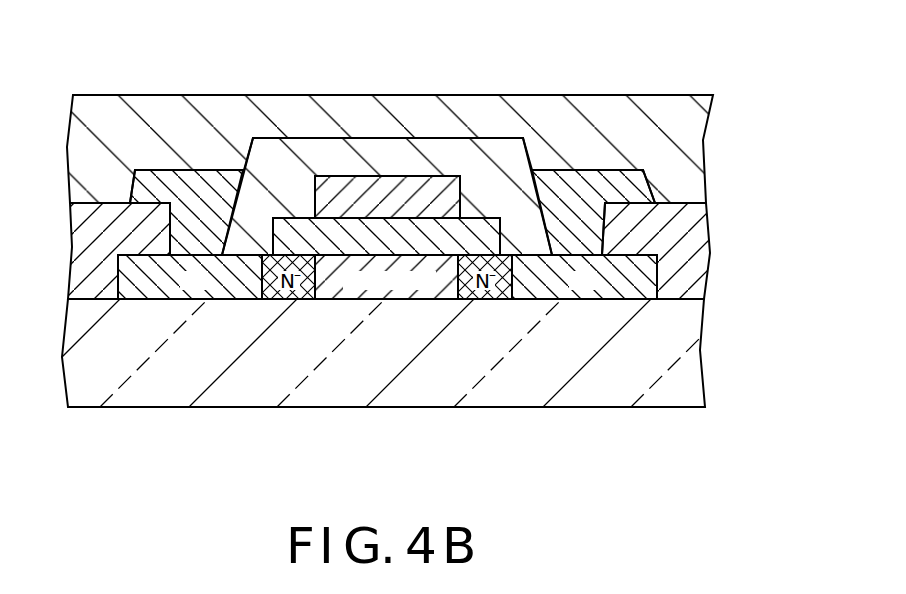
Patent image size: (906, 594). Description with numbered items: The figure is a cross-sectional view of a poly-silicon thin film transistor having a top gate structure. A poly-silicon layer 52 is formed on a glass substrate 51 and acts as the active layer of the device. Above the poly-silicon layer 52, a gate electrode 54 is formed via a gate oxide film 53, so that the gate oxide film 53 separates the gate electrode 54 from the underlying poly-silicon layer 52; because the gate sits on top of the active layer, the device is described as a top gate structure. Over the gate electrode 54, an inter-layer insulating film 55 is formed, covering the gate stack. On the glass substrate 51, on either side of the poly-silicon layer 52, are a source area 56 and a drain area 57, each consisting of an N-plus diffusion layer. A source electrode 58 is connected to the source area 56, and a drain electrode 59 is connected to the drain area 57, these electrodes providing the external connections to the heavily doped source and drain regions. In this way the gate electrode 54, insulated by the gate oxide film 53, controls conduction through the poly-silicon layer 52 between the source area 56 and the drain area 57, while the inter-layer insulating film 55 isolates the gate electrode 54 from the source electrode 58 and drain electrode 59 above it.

The glass substrate 51 is at (532, 393).
The poly-silicon layer 52 is at (438, 287).
The gate oxide film 53 is at (330, 240).
The gate electrode 54 is at (350, 205).
The inter-layer insulating film 55 is at (447, 160).
The source area 56 is at (143, 280).
The drain area 57 is at (643, 273).
The source electrode 58 is at (202, 187).
The drain electrode 59 is at (577, 190).